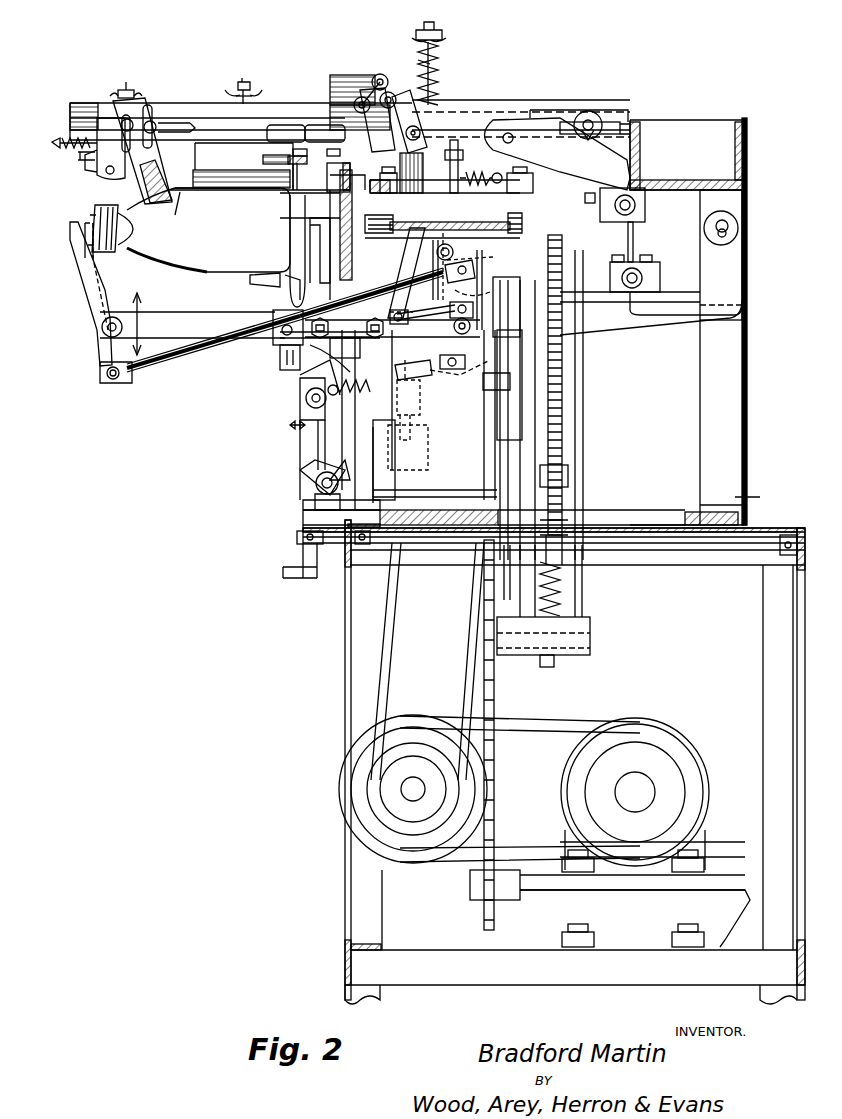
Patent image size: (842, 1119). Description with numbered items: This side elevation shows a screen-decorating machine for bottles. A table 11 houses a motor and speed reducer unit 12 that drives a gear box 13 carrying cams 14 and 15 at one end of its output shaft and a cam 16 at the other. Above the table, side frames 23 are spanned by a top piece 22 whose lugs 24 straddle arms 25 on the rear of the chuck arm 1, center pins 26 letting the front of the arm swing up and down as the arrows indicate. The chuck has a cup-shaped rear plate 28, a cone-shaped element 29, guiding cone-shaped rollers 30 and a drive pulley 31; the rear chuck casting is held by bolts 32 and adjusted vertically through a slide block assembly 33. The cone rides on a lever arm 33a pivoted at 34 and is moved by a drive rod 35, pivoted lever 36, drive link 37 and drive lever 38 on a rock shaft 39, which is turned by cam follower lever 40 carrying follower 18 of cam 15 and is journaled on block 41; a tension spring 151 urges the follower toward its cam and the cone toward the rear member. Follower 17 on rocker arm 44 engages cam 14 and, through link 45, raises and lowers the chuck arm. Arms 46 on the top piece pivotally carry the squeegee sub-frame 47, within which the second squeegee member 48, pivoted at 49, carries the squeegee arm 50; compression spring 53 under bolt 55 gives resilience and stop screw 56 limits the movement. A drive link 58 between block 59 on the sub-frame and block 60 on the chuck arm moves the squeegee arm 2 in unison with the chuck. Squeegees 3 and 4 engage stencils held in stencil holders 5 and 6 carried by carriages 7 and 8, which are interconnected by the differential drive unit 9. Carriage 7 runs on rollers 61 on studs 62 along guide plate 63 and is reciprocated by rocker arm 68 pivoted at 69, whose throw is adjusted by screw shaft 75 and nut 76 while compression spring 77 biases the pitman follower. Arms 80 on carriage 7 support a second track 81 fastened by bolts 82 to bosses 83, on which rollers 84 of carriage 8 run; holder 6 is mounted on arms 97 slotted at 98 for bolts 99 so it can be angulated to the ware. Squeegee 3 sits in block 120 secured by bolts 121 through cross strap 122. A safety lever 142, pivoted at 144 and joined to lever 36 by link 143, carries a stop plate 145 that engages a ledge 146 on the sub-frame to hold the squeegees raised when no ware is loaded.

The chuck arm 1 is at (208, 298).
The squeegee arm 2 is at (293, 104).
The squeegee 3 is at (205, 157).
The squeegee 4 is at (128, 175).
The screen stencil holder 5 is at (250, 187).
The screen stencil holder 6 is at (158, 198).
The carriage 7 is at (430, 198).
The carriage 8 is at (322, 118).
The differential drive unit 9 is at (360, 80).
The table 11 is at (445, 545).
The motor and speed reducer unit 12 is at (653, 718).
The gear box 13 is at (497, 362).
The cam 14 is at (310, 478).
The cam 15 is at (300, 377).
The cam 16 is at (568, 365).
The follower 17 is at (325, 548).
The follower 18 is at (302, 392).
The top piece 22 is at (748, 144).
The side frames 23 is at (740, 418).
The lugs 24 is at (745, 199).
The arms 25 is at (742, 223).
The center pins 26 is at (730, 242).
The rear plate 28 is at (285, 255).
The cone-shaped element 29 is at (95, 218).
The cone-shaped rollers 30 is at (268, 283).
The pulley 31 is at (345, 255).
The bolts 32 is at (280, 355).
The slide block assembly 33 is at (270, 340).
The lever arm 33a is at (95, 312).
The pivot 34 is at (103, 330).
The drive rod 35 is at (183, 350).
The pivoted lever 36 is at (485, 270).
The drive link 37 is at (438, 362).
The drive lever 38 is at (308, 460).
The rock shaft 39 is at (313, 497).
The cam follower lever 40 is at (296, 440).
The block 41 is at (298, 504).
The rocker arm 44 is at (400, 470).
The link 45 is at (412, 414).
The arms 46 is at (572, 120).
The squeegee sub-frame 47 is at (618, 125).
The second squeegee member 48 is at (600, 118).
The pivot 49 is at (588, 112).
The squeegee arm 50 is at (210, 108).
The compression spring 53 is at (440, 72).
The bolt 55 is at (428, 24).
The stop screw 56 is at (418, 70).
The drive link 58 is at (636, 236).
The block 59 is at (647, 207).
The block 60 is at (660, 274).
The rollers 61 is at (410, 232).
The studs 62 is at (500, 214).
The guide plate 63 is at (453, 250).
The rocker arm 68 is at (585, 440).
The pivot 69 is at (592, 637).
The screw shaft 75 is at (565, 406).
The nut 76 is at (570, 478).
The compression spring 77 is at (562, 596).
The arms 80 is at (398, 156).
The second track 81 is at (286, 133).
The bolts 82 is at (325, 133).
The blocks or bosses 83 is at (338, 192).
The rollers 84 is at (263, 158).
The arms 97 is at (155, 125).
The slots 98 is at (140, 125).
The bolts 99 is at (112, 100).
The block 120 is at (243, 100).
The bolts 121 is at (245, 82).
The cross strap 122 is at (258, 94).
The safety lever 142 is at (420, 272).
The link 143 is at (450, 310).
The pivot 144 is at (468, 260).
The stop plate 145 is at (455, 140).
The ledge 146 is at (490, 140).
The tension spring 151 is at (380, 368).